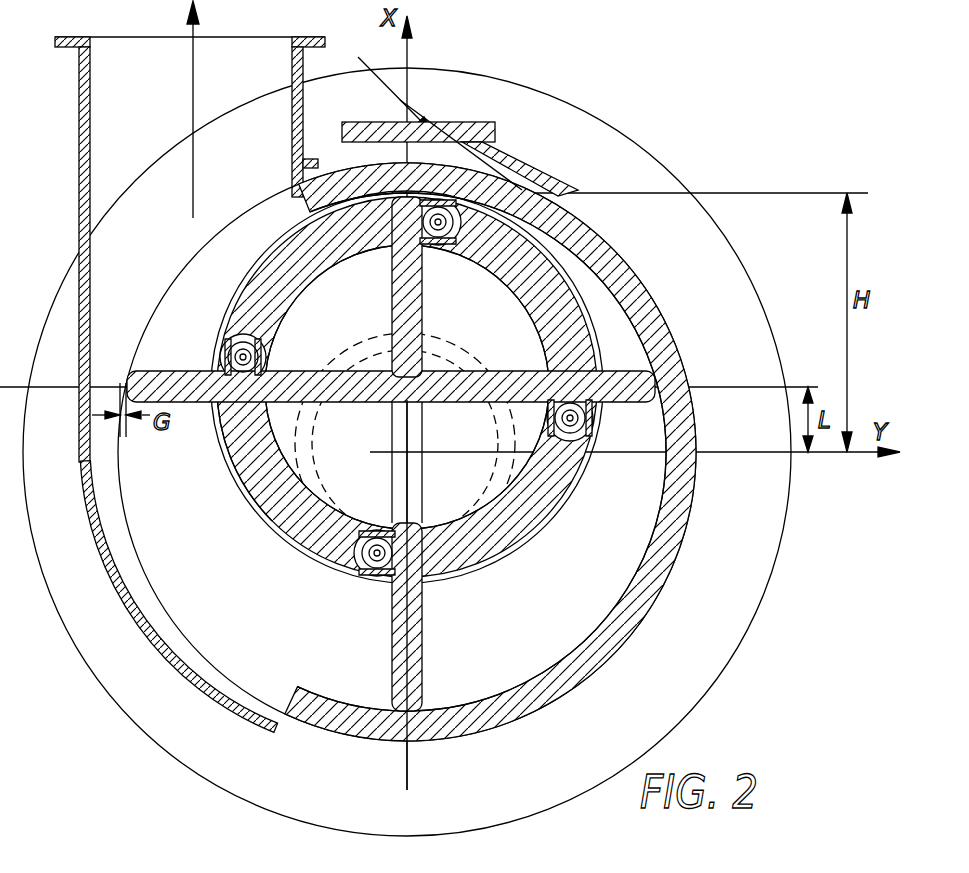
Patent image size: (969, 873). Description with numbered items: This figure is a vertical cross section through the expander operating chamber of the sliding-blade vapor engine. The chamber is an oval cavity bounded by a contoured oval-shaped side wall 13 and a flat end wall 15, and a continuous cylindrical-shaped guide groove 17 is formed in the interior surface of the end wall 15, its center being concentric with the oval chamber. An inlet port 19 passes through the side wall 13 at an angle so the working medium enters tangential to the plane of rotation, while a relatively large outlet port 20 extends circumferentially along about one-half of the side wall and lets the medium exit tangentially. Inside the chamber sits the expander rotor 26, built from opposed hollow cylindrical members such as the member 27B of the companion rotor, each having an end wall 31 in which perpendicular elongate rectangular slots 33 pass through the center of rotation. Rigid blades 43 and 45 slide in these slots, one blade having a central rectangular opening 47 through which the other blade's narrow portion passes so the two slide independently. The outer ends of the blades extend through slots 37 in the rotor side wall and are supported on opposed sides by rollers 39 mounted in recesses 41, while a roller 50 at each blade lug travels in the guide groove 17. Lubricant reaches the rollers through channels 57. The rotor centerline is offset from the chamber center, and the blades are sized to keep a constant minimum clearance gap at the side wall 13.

The contoured oval-shaped side wall 13 is at (660, 538).
The flat end wall 15 is at (497, 653).
The guide groove 17 is at (440, 348).
The inlet port 19 is at (478, 188).
The outlet port 20 is at (203, 672).
The expander rotor 26 is at (238, 538).
The hollow cylindrical member 27B is at (227, 497).
The end wall 31 is at (343, 321).
The elongate rectangular slot 33 is at (420, 304).
The slot 37 is at (376, 246).
The roller 39 is at (442, 204).
The recess 41 is at (232, 338).
The rigid blade 43 is at (427, 665).
The rigid blade 45 is at (655, 370).
The central rectangular opening 47 is at (420, 422).
The roller 50 is at (372, 342).
The channel 57 is at (260, 356).